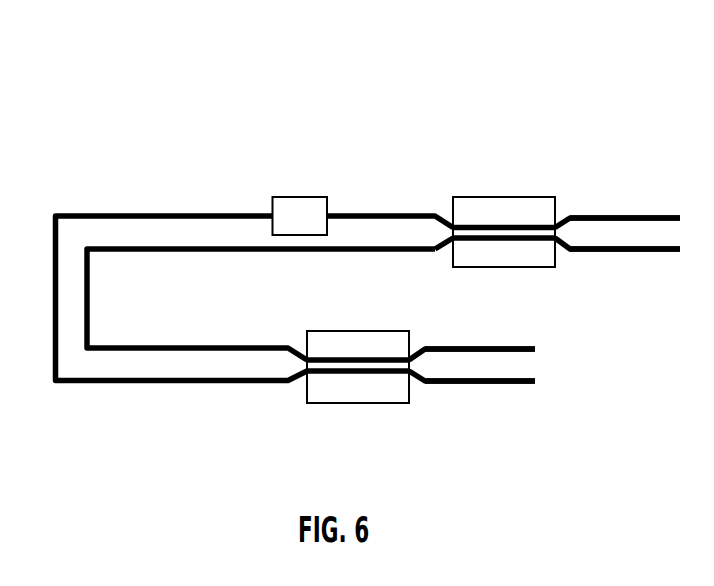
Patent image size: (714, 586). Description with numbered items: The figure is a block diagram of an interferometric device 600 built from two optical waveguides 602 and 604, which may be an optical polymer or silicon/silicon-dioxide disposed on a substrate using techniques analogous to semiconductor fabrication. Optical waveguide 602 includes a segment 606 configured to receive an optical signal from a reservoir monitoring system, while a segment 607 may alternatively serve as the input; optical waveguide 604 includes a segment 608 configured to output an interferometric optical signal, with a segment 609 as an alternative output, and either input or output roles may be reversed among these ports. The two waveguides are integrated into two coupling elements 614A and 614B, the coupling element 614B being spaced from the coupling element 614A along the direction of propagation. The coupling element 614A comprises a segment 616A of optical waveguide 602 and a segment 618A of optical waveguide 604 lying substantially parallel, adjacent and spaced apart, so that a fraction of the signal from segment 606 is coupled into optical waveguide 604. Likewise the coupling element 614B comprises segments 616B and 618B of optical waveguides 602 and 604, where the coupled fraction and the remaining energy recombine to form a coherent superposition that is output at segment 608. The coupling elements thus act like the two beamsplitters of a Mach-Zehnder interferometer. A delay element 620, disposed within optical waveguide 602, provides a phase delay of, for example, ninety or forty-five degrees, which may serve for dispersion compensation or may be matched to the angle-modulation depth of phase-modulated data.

The interferometric device 600 is at (359, 241).
The optical waveguide 602 is at (368, 256).
The optical waveguide 604 is at (383, 299).
The segment 606 is at (625, 185).
The segment 607 is at (625, 284).
The segment 608 is at (480, 316).
The segment 609 is at (480, 415).
The coupling element 614A is at (497, 227).
The coupling element 614B is at (366, 376).
The segment 616A is at (486, 190).
The segment 616B is at (373, 413).
The segment 618A is at (514, 280).
The segment 618B is at (350, 321).
The delay element 620 is at (282, 197).